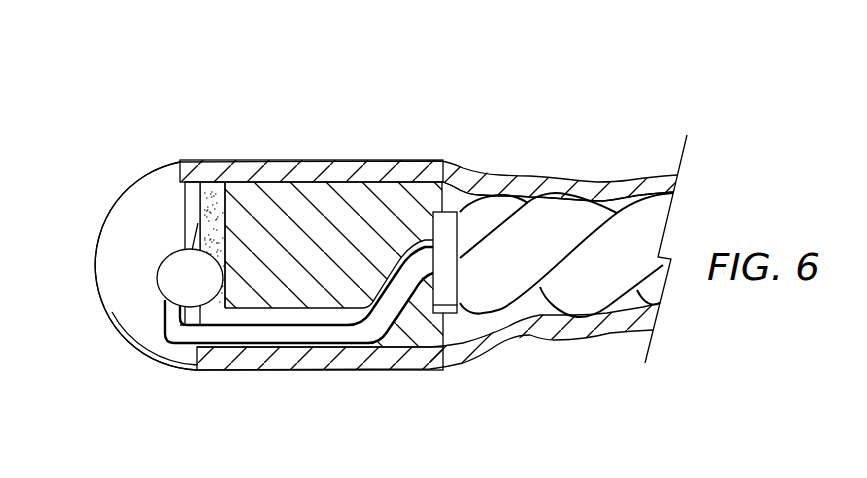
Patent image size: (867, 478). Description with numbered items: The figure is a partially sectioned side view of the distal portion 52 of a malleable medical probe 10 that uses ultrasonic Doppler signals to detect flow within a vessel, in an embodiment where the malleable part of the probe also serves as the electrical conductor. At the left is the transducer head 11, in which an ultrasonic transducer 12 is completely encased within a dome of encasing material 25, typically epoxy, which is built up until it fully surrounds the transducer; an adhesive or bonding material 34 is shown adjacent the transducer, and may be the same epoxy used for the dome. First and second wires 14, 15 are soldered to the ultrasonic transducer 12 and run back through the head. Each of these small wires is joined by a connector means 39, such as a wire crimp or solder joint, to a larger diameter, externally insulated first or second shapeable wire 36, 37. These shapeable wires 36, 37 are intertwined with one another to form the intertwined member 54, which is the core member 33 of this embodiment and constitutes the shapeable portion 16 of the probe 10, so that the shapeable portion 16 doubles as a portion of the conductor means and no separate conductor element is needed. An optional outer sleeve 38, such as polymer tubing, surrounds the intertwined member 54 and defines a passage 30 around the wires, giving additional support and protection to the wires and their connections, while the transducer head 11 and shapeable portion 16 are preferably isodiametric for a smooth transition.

The malleable medical probe 10 is at (587, 75).
The transducer head 11 is at (122, 197).
The ultrasonic transducer 12 is at (188, 187).
The first wire 14 is at (217, 337).
The second wire 15 is at (245, 322).
The shapeable portion 16 is at (602, 105).
The encasing material 25 is at (108, 220).
The passage 30 is at (545, 340).
The core member 33 is at (547, 205).
The adhesive or bonding material 34 is at (217, 187).
The first shapeable wire 36 is at (483, 207).
The second shapeable wire 37 is at (483, 300).
The outer sleeve 38 is at (323, 165).
The connector means 39 is at (443, 220).
The distal portion 52 is at (422, 88).
The intertwined member 54 is at (535, 200).